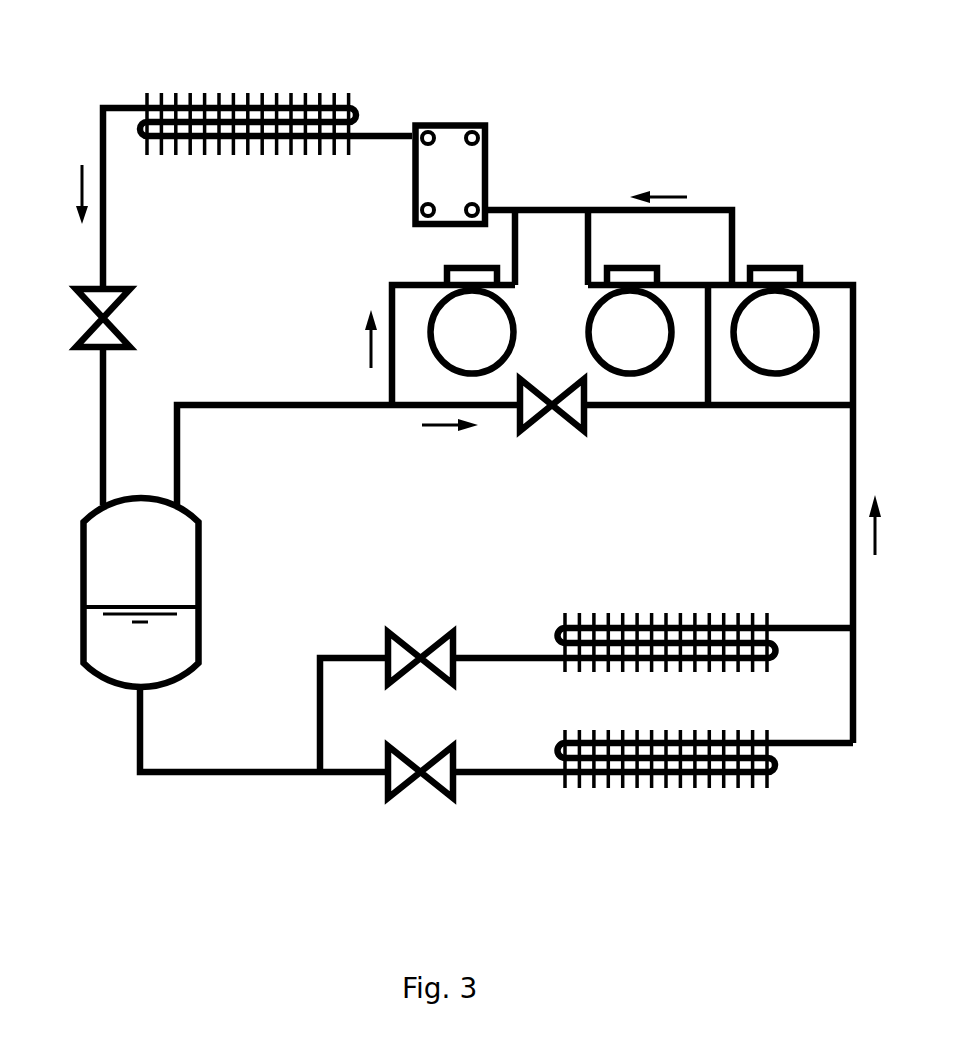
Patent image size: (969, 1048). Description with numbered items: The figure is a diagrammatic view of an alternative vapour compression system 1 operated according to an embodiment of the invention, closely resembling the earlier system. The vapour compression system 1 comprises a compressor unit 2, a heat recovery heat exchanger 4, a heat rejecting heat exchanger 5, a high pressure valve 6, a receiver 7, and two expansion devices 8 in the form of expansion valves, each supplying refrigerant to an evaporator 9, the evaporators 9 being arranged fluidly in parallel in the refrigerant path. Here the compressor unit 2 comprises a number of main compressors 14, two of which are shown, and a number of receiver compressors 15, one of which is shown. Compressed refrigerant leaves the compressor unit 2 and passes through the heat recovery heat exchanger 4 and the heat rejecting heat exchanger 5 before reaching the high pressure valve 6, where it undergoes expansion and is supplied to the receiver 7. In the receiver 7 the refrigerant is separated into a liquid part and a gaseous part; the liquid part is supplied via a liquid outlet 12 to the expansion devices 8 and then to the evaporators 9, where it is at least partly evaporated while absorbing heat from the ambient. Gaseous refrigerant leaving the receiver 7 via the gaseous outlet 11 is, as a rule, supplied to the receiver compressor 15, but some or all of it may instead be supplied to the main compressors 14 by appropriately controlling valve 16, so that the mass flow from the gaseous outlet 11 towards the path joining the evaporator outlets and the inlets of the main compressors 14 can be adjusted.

The vapour compression system 1 is at (768, 117).
The compressor unit 2 is at (828, 327).
The heat recovery heat exchanger 4 is at (452, 148).
The heat rejecting heat exchanger 5 is at (258, 97).
The high pressure valve 6 is at (100, 297).
The receiver 7 is at (113, 540).
The expansion devices 8 is at (437, 653).
The evaporators 9 is at (640, 625).
The gaseous outlet 11 is at (178, 502).
The liquid outlet 12 is at (133, 688).
The main compressors 14 is at (640, 320).
The receiver compressor 15 is at (472, 313).
The valve 16 is at (560, 424).